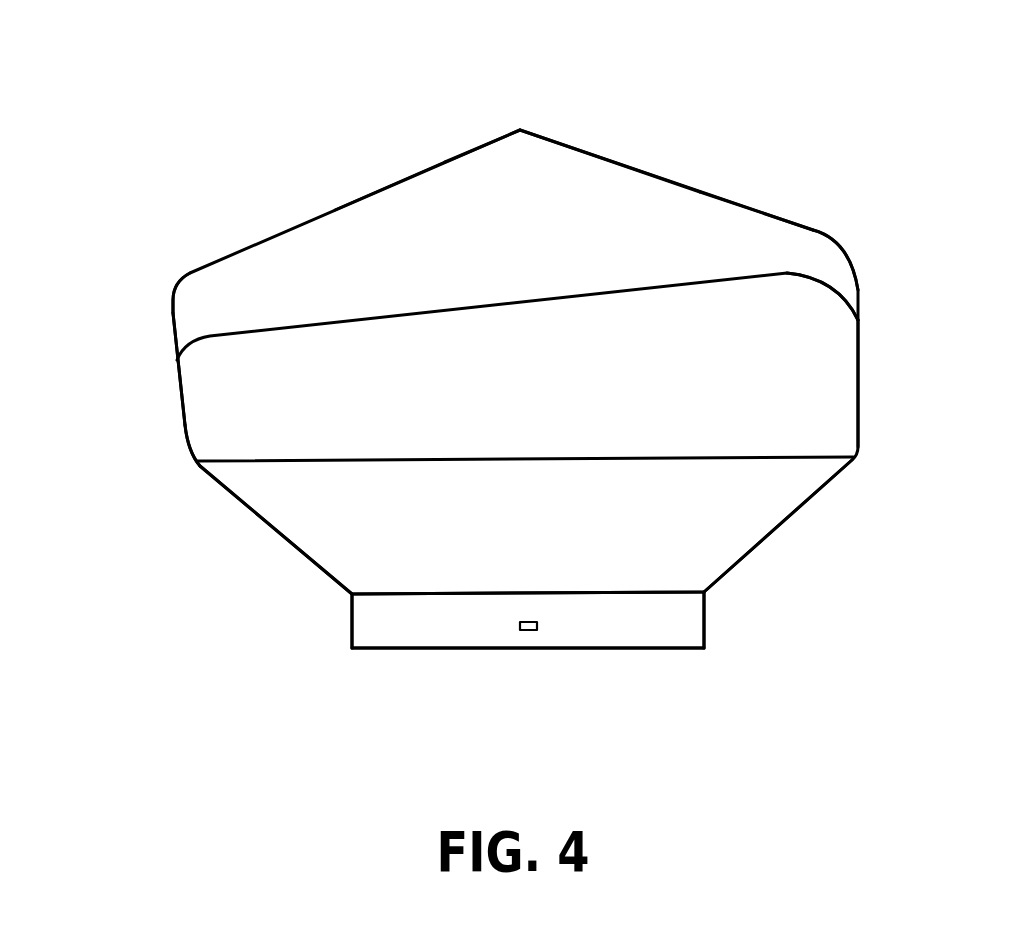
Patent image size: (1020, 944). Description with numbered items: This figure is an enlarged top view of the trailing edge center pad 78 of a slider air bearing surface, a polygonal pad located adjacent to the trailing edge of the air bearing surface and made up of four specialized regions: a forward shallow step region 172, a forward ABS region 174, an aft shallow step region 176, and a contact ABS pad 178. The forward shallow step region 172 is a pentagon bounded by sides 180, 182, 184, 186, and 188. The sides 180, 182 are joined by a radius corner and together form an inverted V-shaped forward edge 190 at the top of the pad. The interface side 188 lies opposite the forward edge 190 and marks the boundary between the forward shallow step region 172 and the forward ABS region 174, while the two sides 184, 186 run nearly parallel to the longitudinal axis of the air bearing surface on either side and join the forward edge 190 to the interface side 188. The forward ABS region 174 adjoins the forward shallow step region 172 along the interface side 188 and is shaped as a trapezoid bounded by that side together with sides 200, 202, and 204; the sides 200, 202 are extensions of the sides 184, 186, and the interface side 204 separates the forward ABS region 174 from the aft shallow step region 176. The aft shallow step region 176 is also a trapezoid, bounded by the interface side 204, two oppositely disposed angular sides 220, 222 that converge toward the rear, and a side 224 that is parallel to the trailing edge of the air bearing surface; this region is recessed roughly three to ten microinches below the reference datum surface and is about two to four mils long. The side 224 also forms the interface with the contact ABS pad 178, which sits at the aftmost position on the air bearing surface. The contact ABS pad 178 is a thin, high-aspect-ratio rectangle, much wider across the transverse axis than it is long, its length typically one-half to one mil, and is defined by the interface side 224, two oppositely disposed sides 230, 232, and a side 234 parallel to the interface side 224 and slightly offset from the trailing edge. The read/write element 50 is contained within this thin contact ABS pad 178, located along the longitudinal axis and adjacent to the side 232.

The trailing edge center pad 78 is at (510, 65).
The read/write element 50 is at (520, 630).
The forward shallow step region 172 is at (612, 177).
The forward ABS region 174 is at (822, 332).
The aft shallow step region 176 is at (310, 530).
The contact ABS pad 178 is at (665, 622).
The side 180 is at (335, 210).
The side 182 is at (735, 198).
The side 184 is at (173, 315).
The side 186 is at (787, 273).
The interface side 188 is at (363, 320).
The inverted V-shaped forward edge 190 is at (445, 162).
The side 200 is at (182, 407).
The side 202 is at (862, 370).
The interface side 204 is at (790, 457).
The angular side 220 is at (212, 485).
The angular side 222 is at (767, 542).
The interface side 224 is at (397, 593).
The side 230 is at (348, 605).
The side 232 is at (707, 595).
The side 234 is at (572, 648).